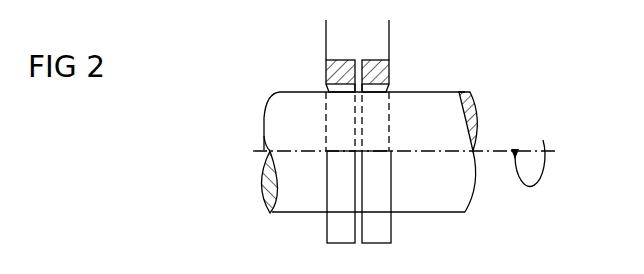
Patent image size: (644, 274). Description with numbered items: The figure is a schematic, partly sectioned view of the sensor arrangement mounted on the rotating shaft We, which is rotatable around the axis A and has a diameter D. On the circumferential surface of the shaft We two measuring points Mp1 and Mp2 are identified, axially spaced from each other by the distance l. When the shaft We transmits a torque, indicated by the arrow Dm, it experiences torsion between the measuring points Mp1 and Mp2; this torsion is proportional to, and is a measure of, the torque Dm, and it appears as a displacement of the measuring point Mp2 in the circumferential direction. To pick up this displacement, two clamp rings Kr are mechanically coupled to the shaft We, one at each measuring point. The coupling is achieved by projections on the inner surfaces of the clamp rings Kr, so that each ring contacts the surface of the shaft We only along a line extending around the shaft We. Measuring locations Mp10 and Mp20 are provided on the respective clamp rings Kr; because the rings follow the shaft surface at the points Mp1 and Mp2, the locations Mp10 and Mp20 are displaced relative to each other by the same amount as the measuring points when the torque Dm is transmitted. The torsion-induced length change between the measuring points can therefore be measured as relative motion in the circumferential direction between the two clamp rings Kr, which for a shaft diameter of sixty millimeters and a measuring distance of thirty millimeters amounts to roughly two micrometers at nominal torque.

The shaft We is at (457, 200).
The axis A is at (264, 150).
The diameter D is at (302, 211).
The measuring point Mp1 is at (326, 92).
The measuring point Mp2 is at (389, 92).
The measuring location Mp10 is at (347, 73).
The measuring location Mp20 is at (378, 73).
The distance l is at (388, 26).
The clamp rings Kr is at (338, 228).
The torque Dm is at (545, 140).